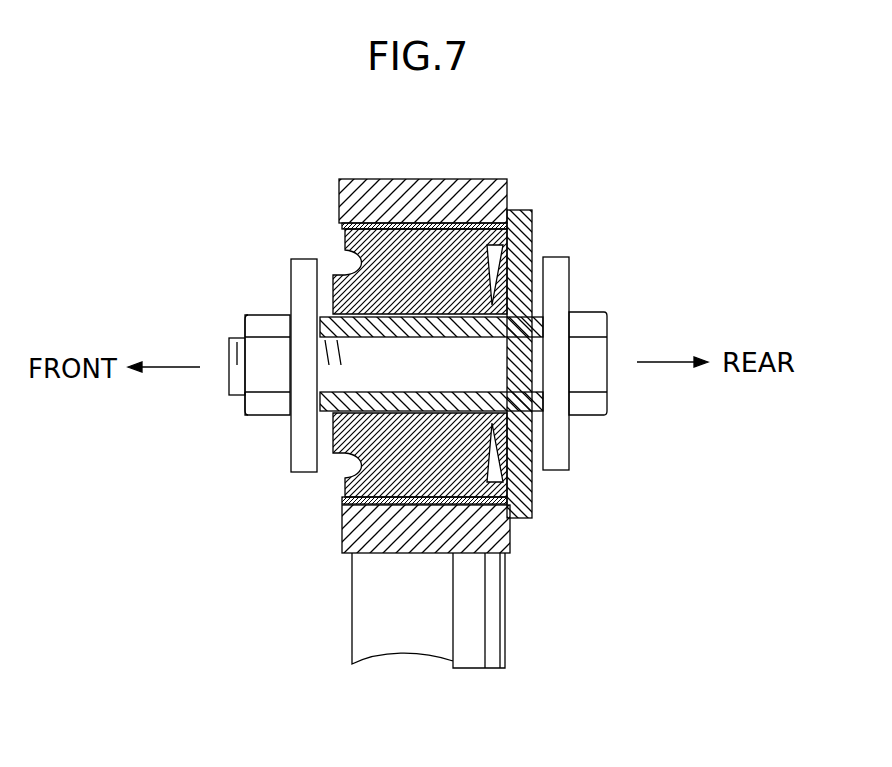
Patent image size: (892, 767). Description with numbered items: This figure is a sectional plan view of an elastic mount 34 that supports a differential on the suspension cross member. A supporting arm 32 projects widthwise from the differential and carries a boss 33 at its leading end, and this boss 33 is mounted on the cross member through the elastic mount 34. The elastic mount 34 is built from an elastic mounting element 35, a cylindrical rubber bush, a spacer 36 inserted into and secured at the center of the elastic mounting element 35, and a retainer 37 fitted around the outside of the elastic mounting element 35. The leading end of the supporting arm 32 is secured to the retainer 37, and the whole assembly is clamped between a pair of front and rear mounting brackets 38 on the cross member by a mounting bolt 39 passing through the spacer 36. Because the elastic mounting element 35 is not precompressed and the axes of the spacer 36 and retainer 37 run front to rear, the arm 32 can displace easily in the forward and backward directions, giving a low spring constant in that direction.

The supporting arm 32 is at (495, 603).
The boss 33 is at (435, 178).
The elastic mount 34 is at (321, 249).
The elastic mounting element 35 is at (347, 478).
The spacer 36 is at (330, 407).
The retainer 37 is at (452, 508).
The mounting bracket 38 is at (297, 275).
The mounting bolt 39 is at (608, 405).